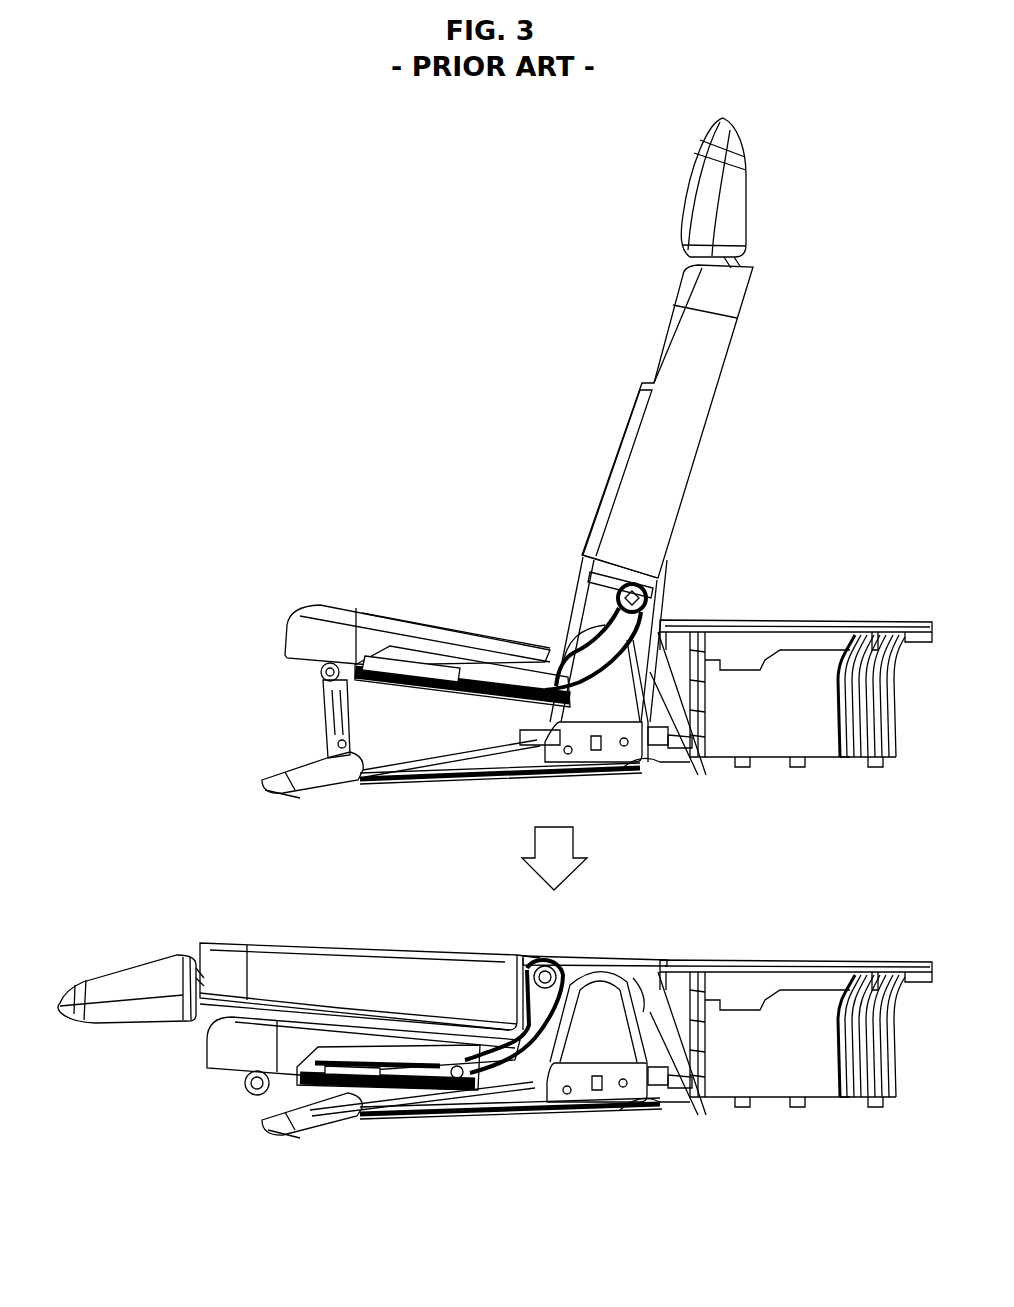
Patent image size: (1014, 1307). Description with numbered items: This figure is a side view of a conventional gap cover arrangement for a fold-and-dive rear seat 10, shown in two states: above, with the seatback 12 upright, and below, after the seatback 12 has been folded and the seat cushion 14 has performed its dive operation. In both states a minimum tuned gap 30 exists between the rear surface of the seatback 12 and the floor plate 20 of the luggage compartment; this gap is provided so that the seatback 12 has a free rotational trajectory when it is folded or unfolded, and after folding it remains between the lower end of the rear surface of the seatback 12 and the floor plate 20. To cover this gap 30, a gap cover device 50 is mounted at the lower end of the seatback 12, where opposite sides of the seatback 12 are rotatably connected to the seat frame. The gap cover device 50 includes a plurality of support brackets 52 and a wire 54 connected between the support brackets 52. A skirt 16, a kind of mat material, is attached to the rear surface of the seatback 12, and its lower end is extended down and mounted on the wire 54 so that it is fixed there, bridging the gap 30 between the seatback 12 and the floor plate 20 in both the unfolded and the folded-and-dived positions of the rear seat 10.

The rear seat 10 is at (548, 488).
The seatback 12 is at (630, 442).
The seat cushion 14 is at (388, 632).
The skirt 16 is at (645, 748).
The floor plate 20 is at (725, 622).
The minimum tuned gap 30 is at (670, 622).
The gap cover device 50 is at (683, 808).
The support brackets 52 is at (700, 750).
The wire 54 is at (672, 745).